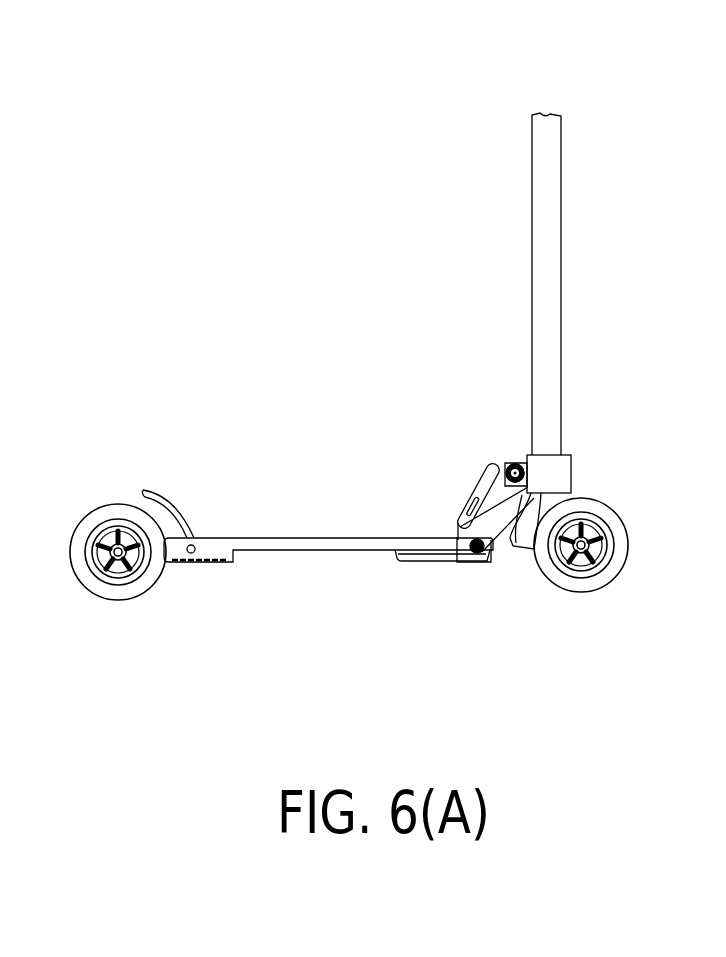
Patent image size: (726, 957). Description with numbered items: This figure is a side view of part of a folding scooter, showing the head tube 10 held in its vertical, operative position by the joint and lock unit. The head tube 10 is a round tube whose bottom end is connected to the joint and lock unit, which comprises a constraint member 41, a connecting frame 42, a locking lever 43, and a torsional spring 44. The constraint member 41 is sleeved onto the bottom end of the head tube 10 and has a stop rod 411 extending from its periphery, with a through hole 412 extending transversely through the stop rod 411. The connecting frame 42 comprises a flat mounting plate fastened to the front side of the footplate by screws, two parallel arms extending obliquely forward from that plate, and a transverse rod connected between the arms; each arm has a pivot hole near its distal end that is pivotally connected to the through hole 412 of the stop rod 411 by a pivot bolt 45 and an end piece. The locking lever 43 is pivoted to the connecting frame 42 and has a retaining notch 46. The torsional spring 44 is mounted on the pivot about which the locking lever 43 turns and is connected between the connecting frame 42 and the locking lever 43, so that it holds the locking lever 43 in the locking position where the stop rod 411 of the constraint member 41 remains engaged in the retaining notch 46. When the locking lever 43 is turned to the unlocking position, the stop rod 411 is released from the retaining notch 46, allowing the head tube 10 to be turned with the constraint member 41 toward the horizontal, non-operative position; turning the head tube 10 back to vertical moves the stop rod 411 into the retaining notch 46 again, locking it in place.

The head tube 10 is at (550, 360).
The constraint member 41 is at (572, 468).
The stop rod 411 is at (460, 520).
The through hole 412 is at (515, 473).
The connecting frame 42 is at (405, 562).
The locking lever 43 is at (480, 467).
The torsional spring 44 is at (477, 553).
The pivot bolt 45 is at (506, 470).
The retaining notch 46 is at (452, 562).